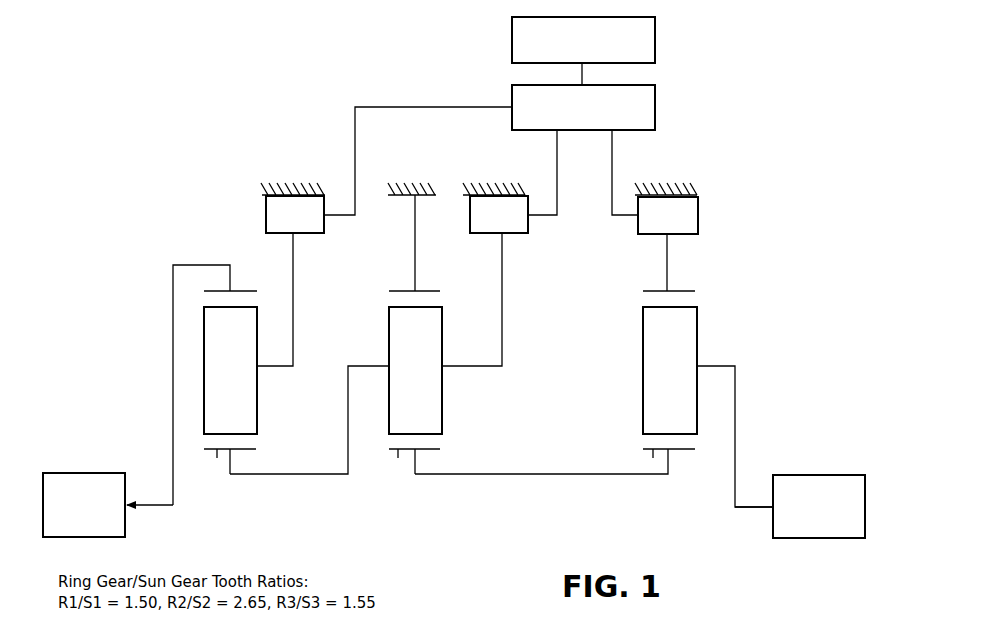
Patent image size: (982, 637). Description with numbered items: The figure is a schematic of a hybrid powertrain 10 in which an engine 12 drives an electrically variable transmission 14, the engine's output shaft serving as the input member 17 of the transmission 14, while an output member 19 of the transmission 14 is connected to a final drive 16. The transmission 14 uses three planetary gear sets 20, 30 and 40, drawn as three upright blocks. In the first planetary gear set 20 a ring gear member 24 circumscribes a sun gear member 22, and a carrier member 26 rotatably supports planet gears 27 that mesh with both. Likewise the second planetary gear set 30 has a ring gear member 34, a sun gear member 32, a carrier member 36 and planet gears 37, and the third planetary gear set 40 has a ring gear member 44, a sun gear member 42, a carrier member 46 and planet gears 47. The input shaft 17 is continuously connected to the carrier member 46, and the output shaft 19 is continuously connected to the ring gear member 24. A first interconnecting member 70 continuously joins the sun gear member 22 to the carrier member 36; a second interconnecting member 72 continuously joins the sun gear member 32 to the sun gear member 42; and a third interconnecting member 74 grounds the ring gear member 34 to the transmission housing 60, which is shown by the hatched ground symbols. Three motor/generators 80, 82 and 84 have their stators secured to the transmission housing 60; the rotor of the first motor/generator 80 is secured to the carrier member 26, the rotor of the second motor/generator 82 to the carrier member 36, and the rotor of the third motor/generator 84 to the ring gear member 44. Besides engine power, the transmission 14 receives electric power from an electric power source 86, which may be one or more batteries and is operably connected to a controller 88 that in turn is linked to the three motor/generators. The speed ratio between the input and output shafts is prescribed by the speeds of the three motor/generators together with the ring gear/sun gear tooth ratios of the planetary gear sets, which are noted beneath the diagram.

The powertrain 10 is at (150, 106).
The engine 12 is at (807, 461).
The electrically variable transmission 14 is at (113, 146).
The final drive 16 is at (107, 451).
The input member 17 is at (750, 510).
The output member 19 is at (148, 507).
The first planetary gear set 20 is at (242, 456).
The sun gear member 22 is at (217, 458).
The ring gear member 24 is at (212, 290).
The carrier member 26 is at (267, 375).
The planet gears 27 is at (230, 370).
The second planetary gear set 30 is at (429, 456).
The sun gear member 32 is at (398, 458).
The ring gear member 34 is at (396, 290).
The carrier member 36 is at (452, 377).
The planet gears 37 is at (415, 370).
The third planetary gear set 40 is at (685, 456).
The sun gear member 42 is at (653, 458).
The ring gear member 44 is at (683, 290).
The carrier member 46 is at (708, 362).
The planet gears 47 is at (670, 370).
The transmission housing 60 is at (291, 186).
The first interconnecting member 70 is at (327, 476).
The second interconnecting member 72 is at (532, 476).
The third interconnecting member 74 is at (416, 250).
The first motor/generator 80 is at (255, 198).
The second motor/generator 82 is at (520, 240).
The third motor/generator 84 is at (712, 199).
The electric power source 86 is at (655, 38).
The controller 88 is at (655, 103).